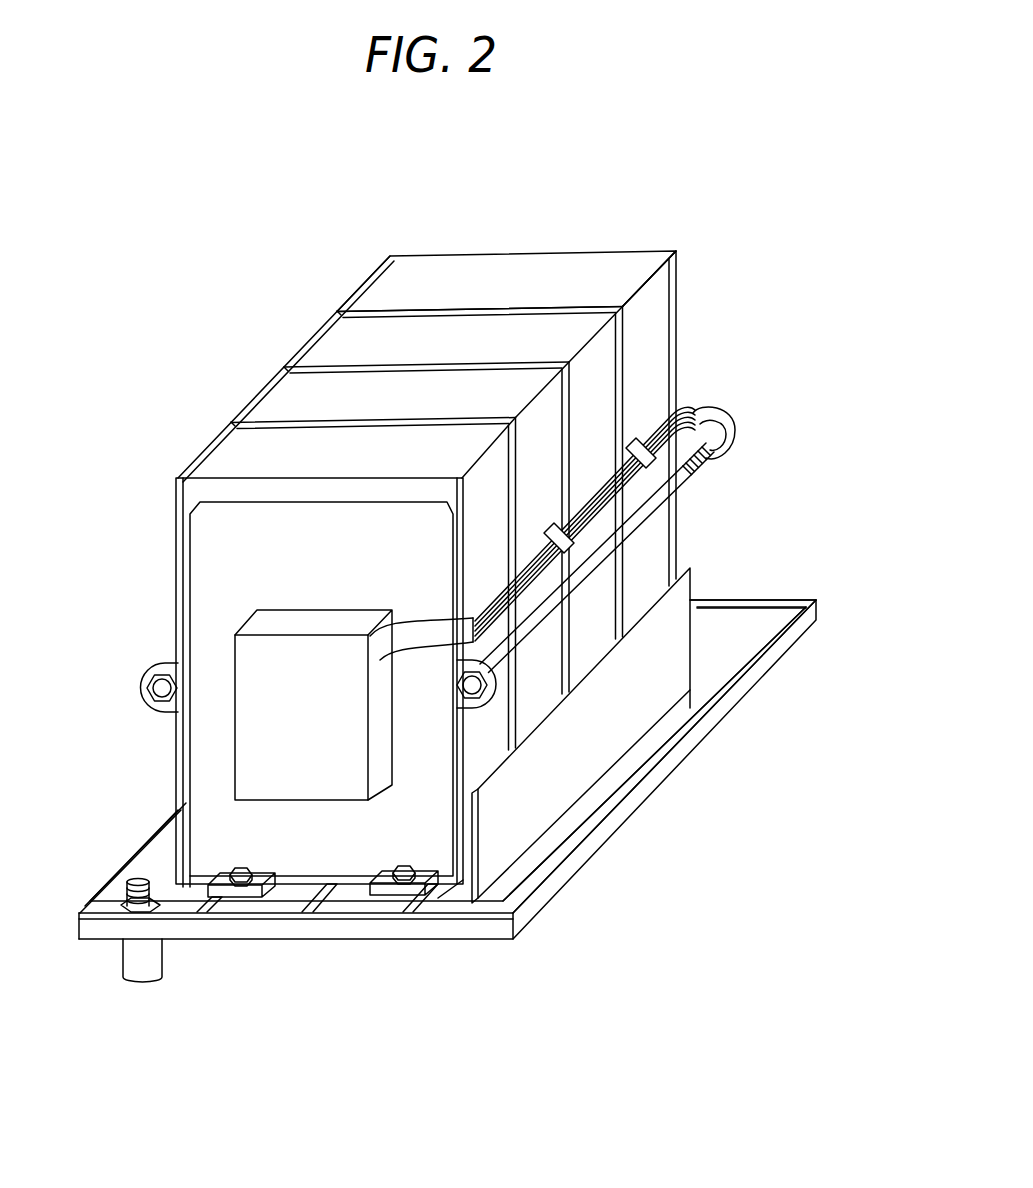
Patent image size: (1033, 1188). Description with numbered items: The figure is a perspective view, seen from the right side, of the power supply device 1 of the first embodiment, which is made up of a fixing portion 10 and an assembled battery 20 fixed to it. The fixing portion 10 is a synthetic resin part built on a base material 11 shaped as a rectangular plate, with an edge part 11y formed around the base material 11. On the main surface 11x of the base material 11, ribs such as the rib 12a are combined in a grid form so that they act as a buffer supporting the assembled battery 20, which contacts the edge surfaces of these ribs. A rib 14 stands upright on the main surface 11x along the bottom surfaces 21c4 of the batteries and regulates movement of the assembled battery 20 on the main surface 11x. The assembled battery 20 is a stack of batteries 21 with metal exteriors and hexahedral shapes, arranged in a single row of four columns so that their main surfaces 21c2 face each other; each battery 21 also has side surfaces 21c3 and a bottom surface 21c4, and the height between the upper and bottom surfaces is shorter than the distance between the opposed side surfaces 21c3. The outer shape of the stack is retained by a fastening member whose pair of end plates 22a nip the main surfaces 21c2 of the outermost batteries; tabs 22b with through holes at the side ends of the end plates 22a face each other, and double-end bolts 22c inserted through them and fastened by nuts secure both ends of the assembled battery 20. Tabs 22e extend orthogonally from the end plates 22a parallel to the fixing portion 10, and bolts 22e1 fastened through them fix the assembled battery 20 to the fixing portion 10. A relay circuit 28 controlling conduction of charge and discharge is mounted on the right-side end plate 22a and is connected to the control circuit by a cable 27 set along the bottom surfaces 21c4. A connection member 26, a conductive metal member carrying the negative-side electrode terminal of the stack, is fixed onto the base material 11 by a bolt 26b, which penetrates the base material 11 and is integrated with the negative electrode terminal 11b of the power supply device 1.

The power supply device 1 is at (448, 546).
The fixing portion 10 is at (448, 787).
The base material 11 is at (789, 645).
The negative electrode terminal 11b is at (142, 965).
The main surface 11x is at (723, 627).
The edge part 11y is at (630, 797).
The rib 12a is at (316, 910).
The rib 14 is at (633, 697).
The assembled battery 20 is at (454, 462).
The battery 21 is at (454, 462).
The main surface 21c2 is at (217, 490).
The side surface 21c3 is at (405, 280).
The bottom surface 21c4 is at (667, 326).
The end plate 22a is at (410, 818).
The tab 22b is at (730, 430).
The double-end bolt 22c is at (643, 498).
The tab 22e is at (246, 895).
The bolt 22e1 is at (237, 890).
The connection member 26 is at (177, 862).
The bolt 26b is at (133, 880).
The cable 27 is at (700, 400).
The relay circuit 28 is at (247, 667).